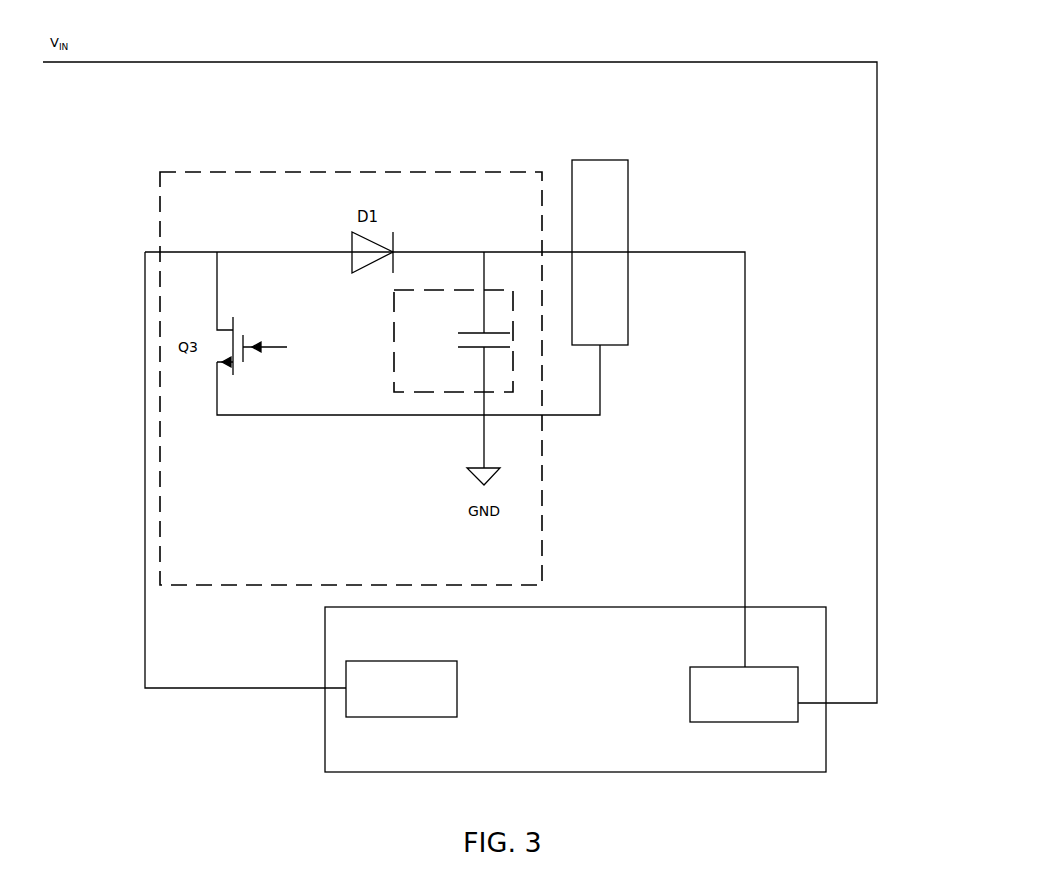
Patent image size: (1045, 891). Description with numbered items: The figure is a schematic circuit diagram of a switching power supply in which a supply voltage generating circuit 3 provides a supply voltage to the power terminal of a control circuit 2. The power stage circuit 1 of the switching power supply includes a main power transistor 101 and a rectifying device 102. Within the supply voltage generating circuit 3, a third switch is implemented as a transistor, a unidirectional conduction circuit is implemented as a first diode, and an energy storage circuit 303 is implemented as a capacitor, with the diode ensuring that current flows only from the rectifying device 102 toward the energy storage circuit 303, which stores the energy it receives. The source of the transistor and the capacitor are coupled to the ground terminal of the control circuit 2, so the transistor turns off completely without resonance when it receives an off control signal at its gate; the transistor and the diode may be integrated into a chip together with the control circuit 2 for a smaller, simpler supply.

The power stage circuit 1 is at (826, 768).
The control circuit 2 is at (628, 205).
The supply voltage generating circuit 3 is at (358, 172).
The main power transistor 101 is at (689, 698).
The rectifying device 102 is at (457, 695).
The energy storage circuit 303 is at (427, 393).